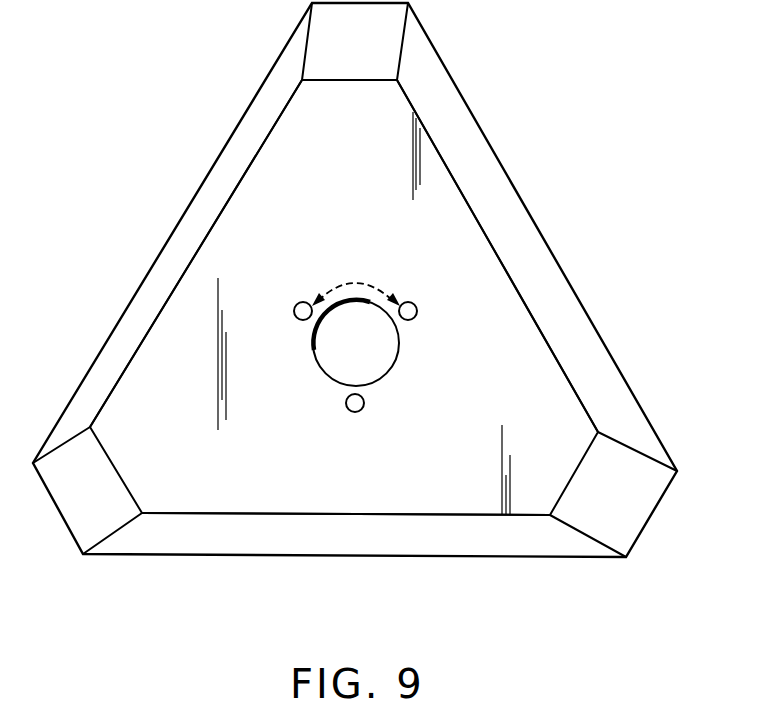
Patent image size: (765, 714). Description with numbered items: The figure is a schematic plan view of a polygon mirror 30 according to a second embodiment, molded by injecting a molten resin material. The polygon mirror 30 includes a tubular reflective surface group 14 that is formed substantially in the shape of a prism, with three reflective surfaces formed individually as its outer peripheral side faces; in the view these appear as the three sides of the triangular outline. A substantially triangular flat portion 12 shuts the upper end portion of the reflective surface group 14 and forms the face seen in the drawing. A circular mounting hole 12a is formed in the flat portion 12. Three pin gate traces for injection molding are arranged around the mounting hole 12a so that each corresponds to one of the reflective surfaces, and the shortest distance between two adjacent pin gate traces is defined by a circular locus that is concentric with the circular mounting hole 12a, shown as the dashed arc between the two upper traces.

The reflective surface group 14 is at (522, 142).
The polygon mirror 30 is at (570, 214).
The flat portion 12 is at (546, 382).
The mounting hole 12a is at (384, 376).